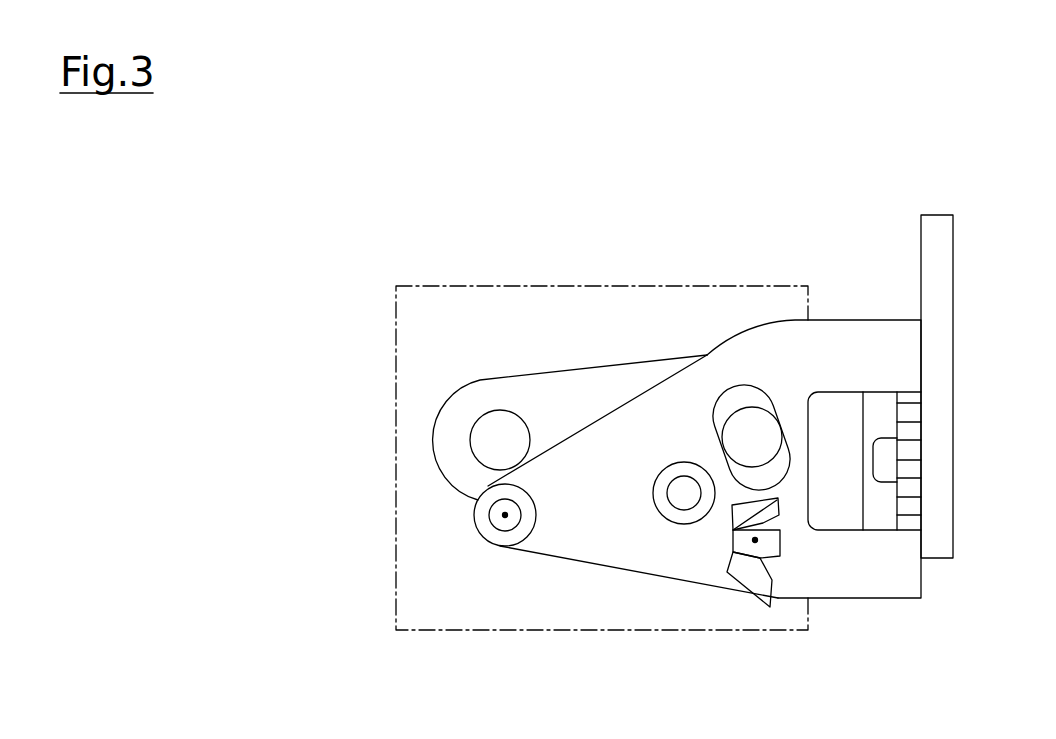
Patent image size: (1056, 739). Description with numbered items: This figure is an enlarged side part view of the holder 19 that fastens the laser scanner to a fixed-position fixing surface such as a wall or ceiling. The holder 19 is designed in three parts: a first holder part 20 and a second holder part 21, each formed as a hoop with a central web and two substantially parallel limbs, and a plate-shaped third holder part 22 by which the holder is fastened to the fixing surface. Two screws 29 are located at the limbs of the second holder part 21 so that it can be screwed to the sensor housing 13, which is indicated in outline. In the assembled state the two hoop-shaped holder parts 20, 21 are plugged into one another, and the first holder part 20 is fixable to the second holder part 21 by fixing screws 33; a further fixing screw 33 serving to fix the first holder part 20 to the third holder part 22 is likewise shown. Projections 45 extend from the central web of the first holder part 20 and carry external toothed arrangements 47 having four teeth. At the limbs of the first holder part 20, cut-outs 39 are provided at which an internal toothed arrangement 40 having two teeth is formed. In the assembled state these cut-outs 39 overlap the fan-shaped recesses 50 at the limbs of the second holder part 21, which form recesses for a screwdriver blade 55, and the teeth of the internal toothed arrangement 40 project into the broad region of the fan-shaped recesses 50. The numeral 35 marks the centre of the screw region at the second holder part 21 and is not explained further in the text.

The holder 19 is at (975, 145).
The sensor housing 13 is at (495, 322).
The second holder part 21 is at (587, 392).
The fixing screws 33 is at (682, 465).
The screws 29 is at (490, 443).
The first holder part 20 is at (781, 350).
The third holder part 22 is at (938, 270).
The projections 45 is at (912, 415).
The external toothed arrangements 47 is at (930, 470).
The pivot axis 35 is at (497, 519).
The cut-outs 39 is at (737, 568).
The fan-shaped recesses 50 is at (750, 552).
The screwdriver blade 55 is at (733, 538).
The internal toothed arrangement 40 is at (797, 569).